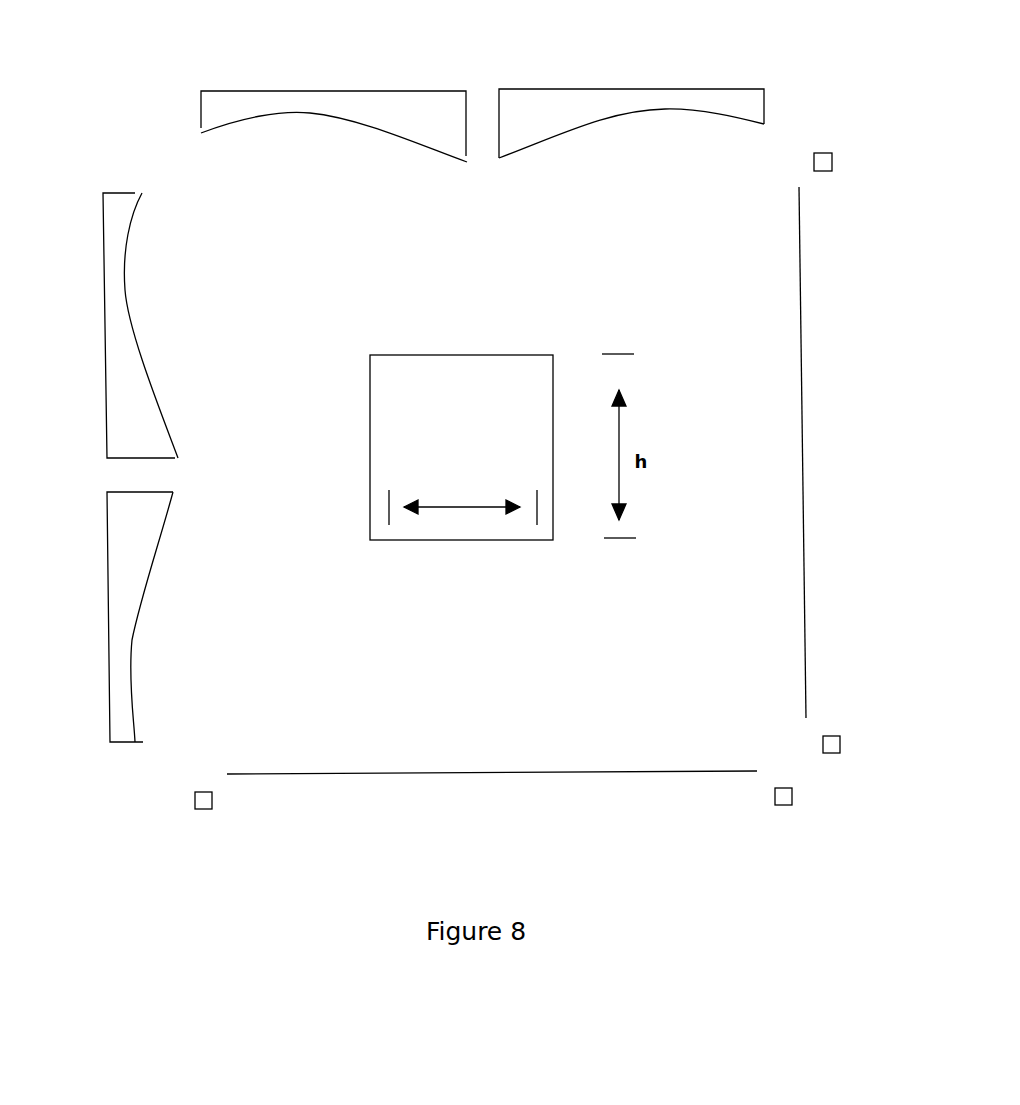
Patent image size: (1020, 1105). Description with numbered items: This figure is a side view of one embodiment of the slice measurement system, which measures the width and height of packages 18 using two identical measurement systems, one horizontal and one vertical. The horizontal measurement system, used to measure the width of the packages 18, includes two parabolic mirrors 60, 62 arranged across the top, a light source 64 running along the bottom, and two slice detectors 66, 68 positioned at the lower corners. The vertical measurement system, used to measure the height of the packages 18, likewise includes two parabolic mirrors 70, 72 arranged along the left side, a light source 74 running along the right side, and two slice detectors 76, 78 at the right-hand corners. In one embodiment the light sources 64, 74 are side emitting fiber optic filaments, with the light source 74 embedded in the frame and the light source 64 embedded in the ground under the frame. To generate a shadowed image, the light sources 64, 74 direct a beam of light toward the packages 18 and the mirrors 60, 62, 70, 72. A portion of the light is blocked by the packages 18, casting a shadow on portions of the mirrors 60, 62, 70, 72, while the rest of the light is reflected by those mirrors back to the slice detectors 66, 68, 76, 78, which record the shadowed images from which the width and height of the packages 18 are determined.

The package 18 is at (473, 355).
The parabolic mirror 60 is at (316, 92).
The parabolic mirror 62 is at (632, 88).
The light source 64 is at (505, 775).
The slice detector 66 is at (212, 809).
The slice detector 68 is at (772, 795).
The parabolic mirror 70 is at (107, 595).
The parabolic mirror 72 is at (103, 295).
The light source 74 is at (803, 437).
The slice detector 76 is at (838, 718).
The slice detector 78 is at (830, 138).